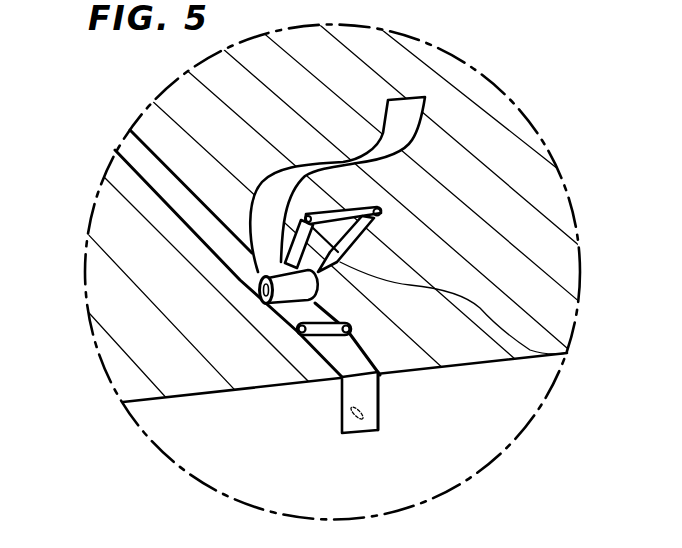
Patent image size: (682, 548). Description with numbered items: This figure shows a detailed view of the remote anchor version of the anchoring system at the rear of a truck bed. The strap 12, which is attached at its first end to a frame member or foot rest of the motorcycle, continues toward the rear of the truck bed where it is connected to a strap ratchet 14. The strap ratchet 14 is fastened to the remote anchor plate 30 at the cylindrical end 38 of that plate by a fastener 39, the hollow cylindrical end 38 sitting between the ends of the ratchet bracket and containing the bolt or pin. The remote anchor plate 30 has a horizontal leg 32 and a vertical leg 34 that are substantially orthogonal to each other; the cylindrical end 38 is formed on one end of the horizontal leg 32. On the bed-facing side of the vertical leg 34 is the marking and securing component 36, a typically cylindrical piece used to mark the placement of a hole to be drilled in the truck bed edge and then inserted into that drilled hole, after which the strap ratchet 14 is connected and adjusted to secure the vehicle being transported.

The strap 12 is at (160, 175).
The strap ratchet 14 is at (565, 355).
The remote anchor plate 30 is at (367, 358).
The horizontal leg 32 is at (338, 352).
The vertical leg 34 is at (380, 414).
The marking and securing component 36 is at (342, 430).
The cylindrical end 38 is at (322, 308).
The fastener 39 is at (298, 330).